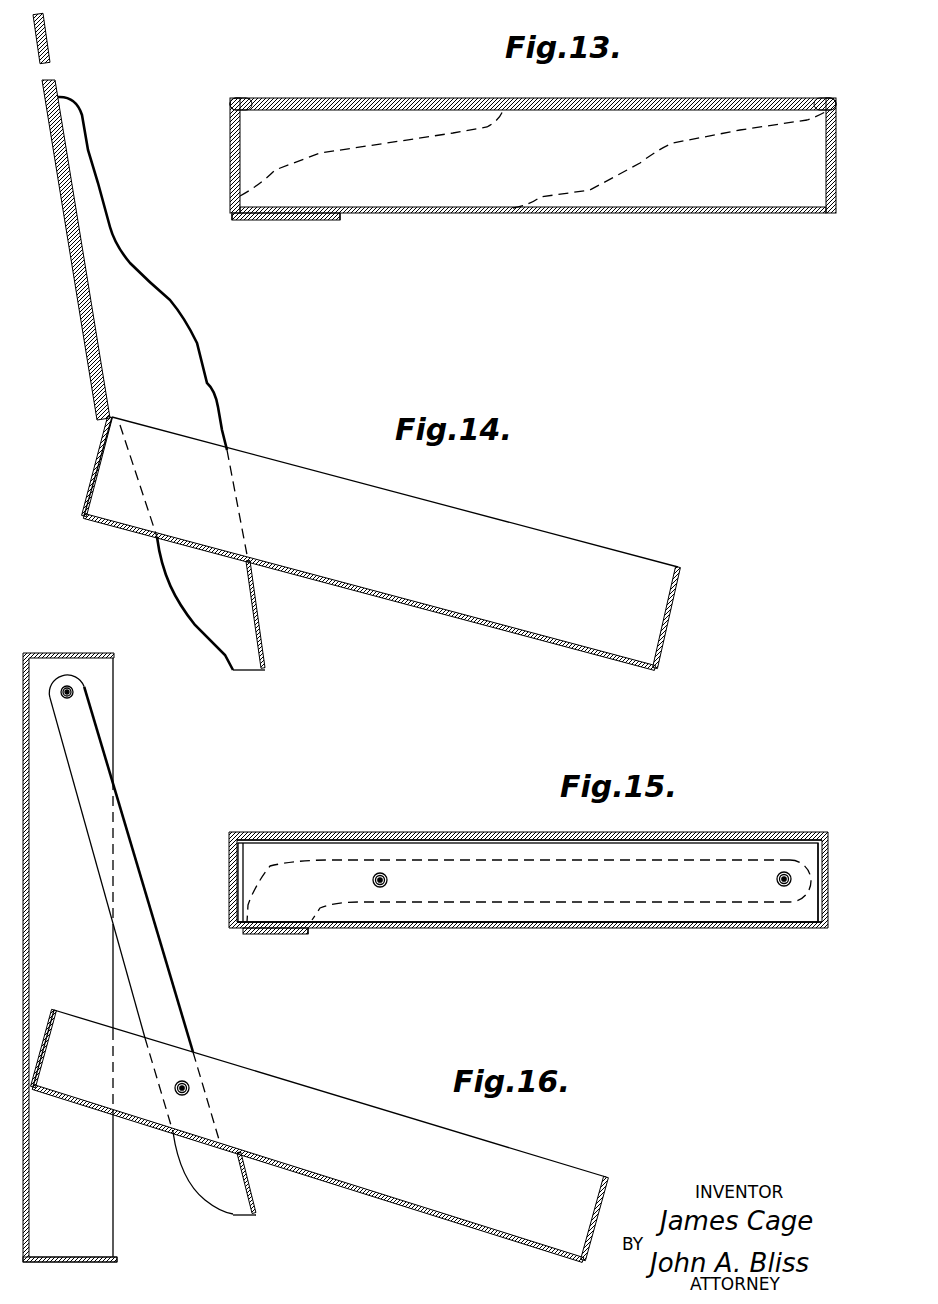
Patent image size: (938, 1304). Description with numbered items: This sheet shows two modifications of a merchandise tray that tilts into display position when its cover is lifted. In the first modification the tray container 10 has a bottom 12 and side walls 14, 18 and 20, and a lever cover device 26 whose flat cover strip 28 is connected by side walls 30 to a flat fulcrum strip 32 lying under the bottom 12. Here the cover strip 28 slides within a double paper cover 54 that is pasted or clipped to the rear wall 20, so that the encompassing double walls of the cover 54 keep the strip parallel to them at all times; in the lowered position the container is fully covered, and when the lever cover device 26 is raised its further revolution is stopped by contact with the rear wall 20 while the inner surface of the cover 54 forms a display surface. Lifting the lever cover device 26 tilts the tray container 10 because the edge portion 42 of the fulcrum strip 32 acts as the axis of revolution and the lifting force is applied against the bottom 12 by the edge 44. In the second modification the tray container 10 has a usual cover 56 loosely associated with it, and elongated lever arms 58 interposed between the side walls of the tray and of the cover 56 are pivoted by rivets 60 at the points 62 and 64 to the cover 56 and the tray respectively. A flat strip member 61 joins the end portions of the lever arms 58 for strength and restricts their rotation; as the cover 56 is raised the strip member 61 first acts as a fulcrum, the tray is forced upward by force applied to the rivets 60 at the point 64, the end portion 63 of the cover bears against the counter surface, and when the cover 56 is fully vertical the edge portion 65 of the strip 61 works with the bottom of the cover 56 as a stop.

In FIG. 14, the tray container 10 is at (380, 597).
In FIG. 15, the tray container 10 is at (522, 925).
In FIG. 16, the tray container 10 is at (372, 1190).
In FIG. 14, the bottom 12 is at (480, 622).
In FIG. 16, the bottom 12 is at (447, 1213).
In FIG. 13, the side wall 14 is at (733, 200).
In FIG. 14, the side wall 14 is at (452, 515).
In FIG. 15, the side wall 14 is at (490, 850).
In FIG. 16, the side wall 14 is at (352, 1095).
In FIG. 13, the side wall 18 is at (828, 158).
In FIG. 14, the side wall 18 is at (673, 608).
In FIG. 15, the side wall 18 is at (812, 884).
In FIG. 16, the side wall 18 is at (602, 1193).
In FIG. 13, the rear side wall 20 is at (232, 149).
In FIG. 14, the rear side wall 20 is at (92, 462).
In FIG. 15, the rear side wall 20 is at (245, 871).
In FIG. 16, the rear side wall 20 is at (50, 1043).
In FIG. 14, the lever cover device 26 is at (127, 260).
In FIG. 13, the cover strip 28 is at (735, 85).
In FIG. 14, the cover strip 28 is at (70, 222).
In FIG. 13, the side walls 30 is at (640, 156).
In FIG. 14, the side walls 30 is at (188, 332).
In FIG. 13, the fulcrum strip 32 is at (290, 221).
In FIG. 14, the fulcrum strip 32 is at (262, 623).
In FIG. 13, the edge portion 42 is at (228, 220).
In FIG. 14, the edge portion 42 is at (267, 670).
In FIG. 13, the edge 44 is at (342, 218).
In FIG. 14, the edge 44 is at (249, 559).
In FIG. 13, the double paper cover 54 is at (417, 80).
In FIG. 14, the double paper cover 54 is at (50, 44).
In FIG. 15, the cover 56 is at (690, 831).
In FIG. 16, the cover 56 is at (30, 955).
In FIG. 15, the lever arms 58 is at (623, 895).
In FIG. 16, the lever arms 58 is at (150, 957).
In FIG. 15, the rivets 60 is at (383, 886).
In FIG. 16, the rivets 60 is at (71, 690).
In FIG. 15, the strip member 61 is at (280, 934).
In FIG. 16, the strip member 61 is at (257, 1190).
In FIG. 15, the pivot point 62 is at (790, 873).
In FIG. 16, the pivot point 62 is at (74, 698).
In FIG. 15, the end portion 63 is at (229, 852).
In FIG. 16, the end portion 63 is at (72, 1257).
In FIG. 15, the pivot point 64 is at (383, 874).
In FIG. 16, the pivot point 64 is at (186, 1092).
In FIG. 15, the edge portion 65 is at (313, 933).
In FIG. 16, the edge portion 65 is at (243, 1152).